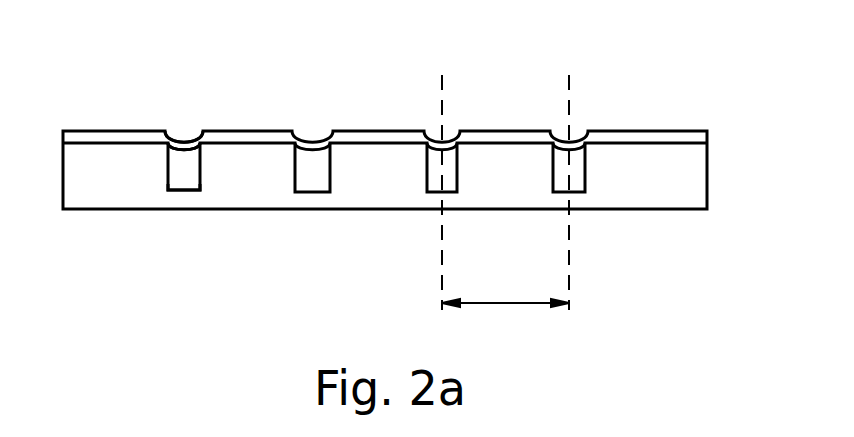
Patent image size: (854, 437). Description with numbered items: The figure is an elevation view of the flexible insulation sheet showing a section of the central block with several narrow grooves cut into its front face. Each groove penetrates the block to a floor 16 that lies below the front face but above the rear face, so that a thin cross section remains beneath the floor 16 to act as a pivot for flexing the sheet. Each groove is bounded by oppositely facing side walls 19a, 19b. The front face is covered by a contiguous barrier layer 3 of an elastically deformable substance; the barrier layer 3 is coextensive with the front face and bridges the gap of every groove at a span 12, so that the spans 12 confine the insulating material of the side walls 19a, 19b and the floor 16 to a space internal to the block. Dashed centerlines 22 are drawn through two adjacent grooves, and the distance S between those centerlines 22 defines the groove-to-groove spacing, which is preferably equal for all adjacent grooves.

The barrier layer 3 is at (375, 136).
The span 12 is at (180, 133).
The floor 16 is at (203, 185).
The side wall 19a is at (172, 190).
The side wall 19b is at (192, 132).
The centerline 22 is at (442, 271).
The distance between centerlines S is at (488, 302).